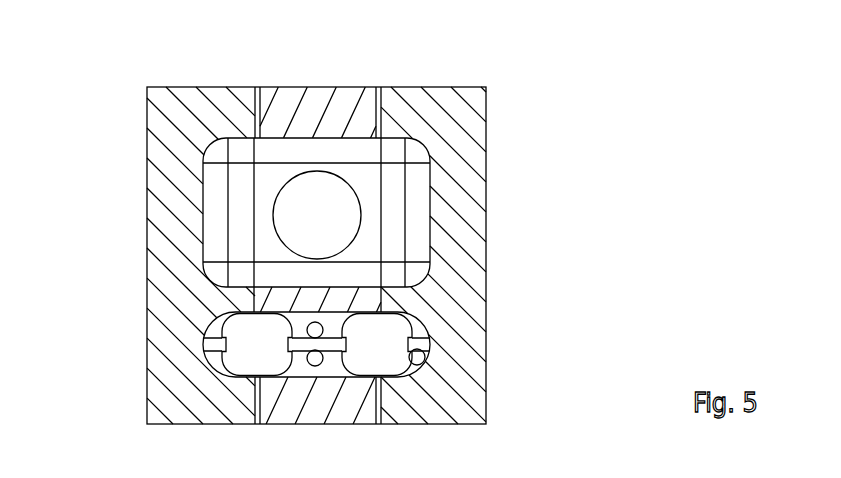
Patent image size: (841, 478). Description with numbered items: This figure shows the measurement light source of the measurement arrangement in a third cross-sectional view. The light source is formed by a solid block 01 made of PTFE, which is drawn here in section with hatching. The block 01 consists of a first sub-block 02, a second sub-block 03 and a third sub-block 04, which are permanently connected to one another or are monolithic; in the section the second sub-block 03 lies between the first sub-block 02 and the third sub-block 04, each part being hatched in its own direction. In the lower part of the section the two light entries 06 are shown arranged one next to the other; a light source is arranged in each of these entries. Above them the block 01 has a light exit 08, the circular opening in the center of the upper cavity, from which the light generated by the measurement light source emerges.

The block 01 is at (478, 310).
The first sub-block 02 is at (474, 130).
The second sub-block 03 is at (324, 104).
The third sub-block 04 is at (160, 105).
The light entries 06 is at (242, 343).
The light exit 08 is at (293, 204).